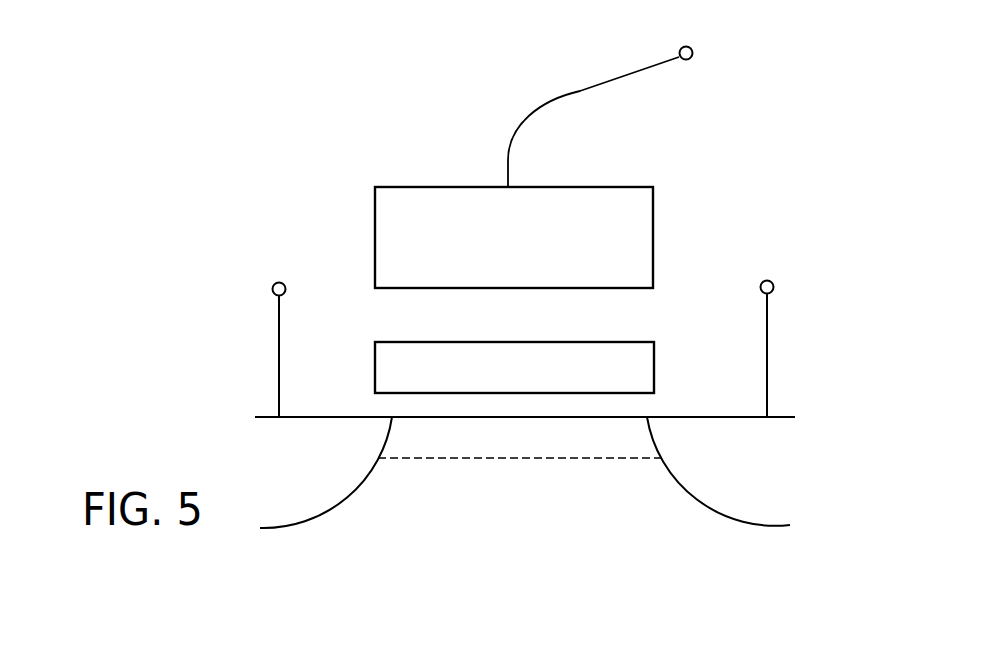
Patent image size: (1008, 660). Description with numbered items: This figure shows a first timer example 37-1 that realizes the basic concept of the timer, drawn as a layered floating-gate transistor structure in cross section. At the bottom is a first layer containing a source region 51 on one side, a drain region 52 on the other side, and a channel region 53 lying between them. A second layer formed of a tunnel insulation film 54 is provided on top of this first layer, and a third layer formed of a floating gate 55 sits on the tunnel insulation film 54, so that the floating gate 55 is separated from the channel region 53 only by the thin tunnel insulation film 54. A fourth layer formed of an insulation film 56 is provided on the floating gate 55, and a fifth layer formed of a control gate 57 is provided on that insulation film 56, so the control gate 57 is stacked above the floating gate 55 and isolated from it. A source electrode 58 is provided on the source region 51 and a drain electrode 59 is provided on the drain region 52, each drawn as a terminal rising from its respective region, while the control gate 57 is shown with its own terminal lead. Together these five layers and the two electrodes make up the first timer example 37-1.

The first timer example 37-1 is at (392, 147).
The source region 51 is at (350, 490).
The drain region 52 is at (693, 493).
The channel region 53 is at (520, 461).
The tunnel insulation film 54 is at (645, 404).
The floating gate 55 is at (654, 370).
The insulation film 56 is at (643, 314).
The control gate 57 is at (653, 203).
The source electrode 58 is at (273, 293).
The drain electrode 59 is at (774, 289).